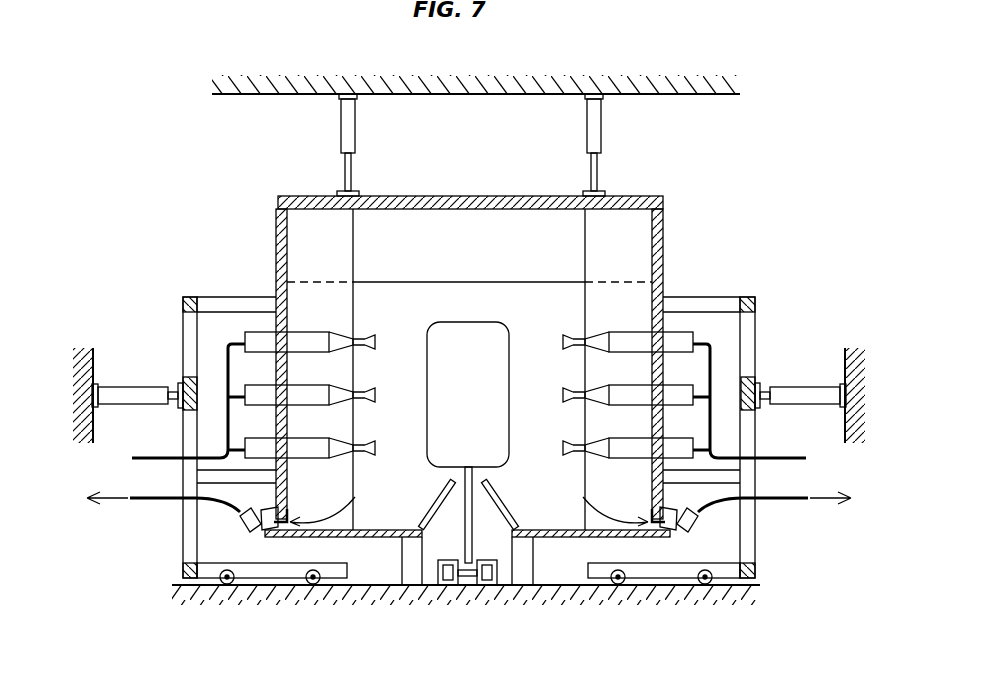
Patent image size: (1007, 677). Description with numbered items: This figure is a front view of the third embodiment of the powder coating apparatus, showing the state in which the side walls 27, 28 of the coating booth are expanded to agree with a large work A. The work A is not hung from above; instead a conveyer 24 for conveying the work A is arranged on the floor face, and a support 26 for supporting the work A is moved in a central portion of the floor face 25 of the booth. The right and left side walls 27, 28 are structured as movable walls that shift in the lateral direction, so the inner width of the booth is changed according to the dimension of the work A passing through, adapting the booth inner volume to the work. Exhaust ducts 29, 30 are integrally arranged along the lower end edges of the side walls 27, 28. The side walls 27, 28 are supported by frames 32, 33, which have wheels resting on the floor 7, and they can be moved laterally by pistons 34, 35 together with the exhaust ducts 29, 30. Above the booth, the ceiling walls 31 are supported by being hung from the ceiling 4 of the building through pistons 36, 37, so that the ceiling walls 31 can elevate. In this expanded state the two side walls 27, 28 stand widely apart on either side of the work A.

The ceiling 4 is at (690, 96).
The floor 7 is at (183, 572).
The conveyer 24 is at (484, 585).
The floor face 25 is at (503, 508).
The support 26 is at (467, 525).
The side wall 27 is at (282, 255).
The side wall 28 is at (658, 255).
The exhaust duct 29 is at (276, 537).
The exhaust duct 30 is at (662, 537).
The ceiling wall 31 is at (618, 200).
The frame 32 is at (188, 520).
The frame 33 is at (750, 520).
The piston 34 is at (128, 395).
The piston 35 is at (810, 395).
The piston 36 is at (346, 128).
The piston 37 is at (596, 128).
The work A is at (467, 363).